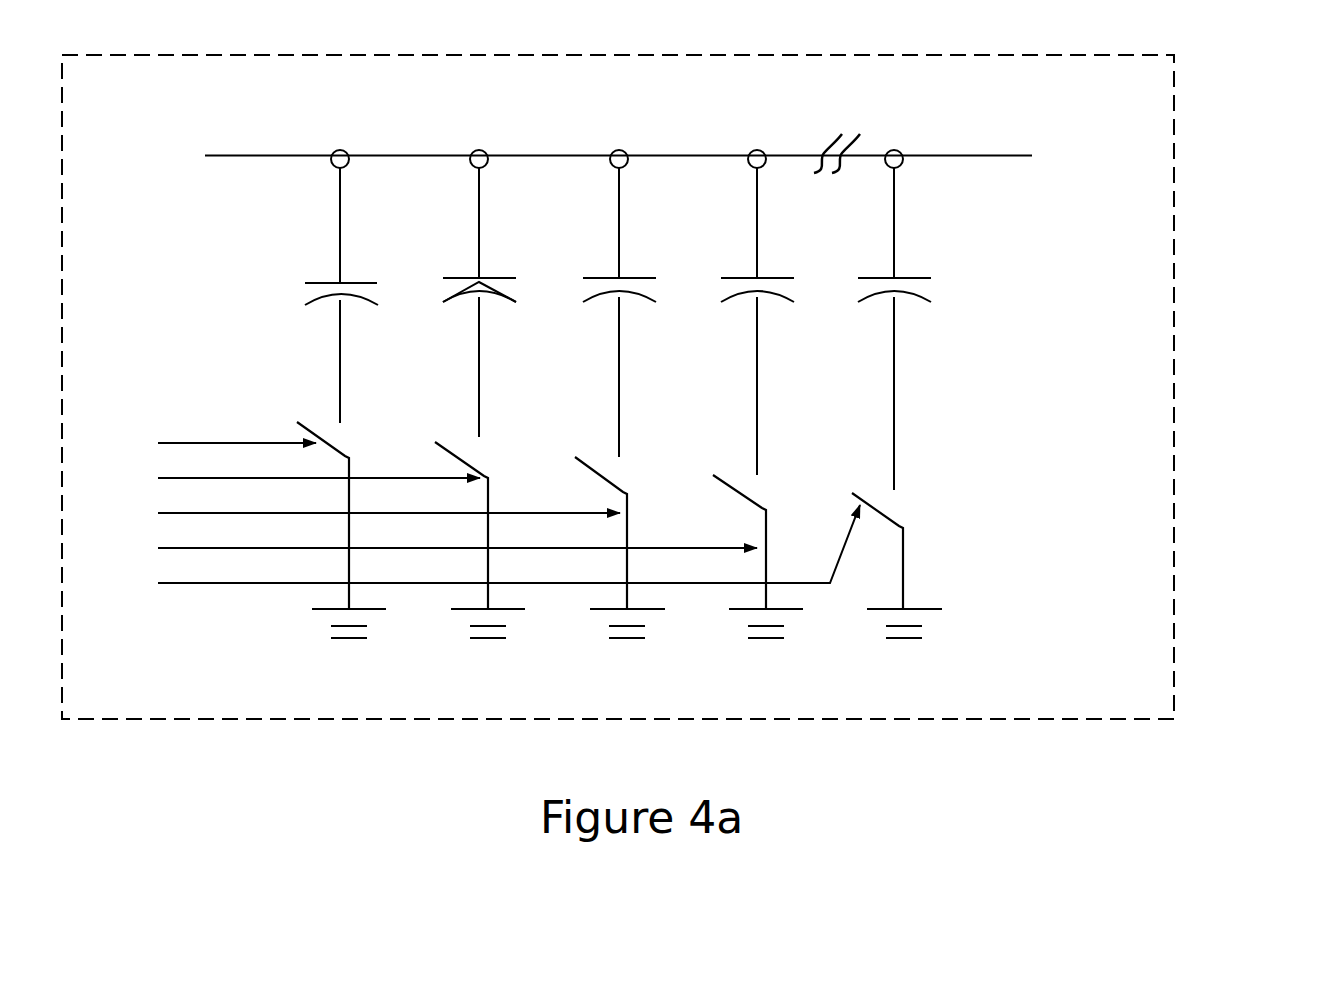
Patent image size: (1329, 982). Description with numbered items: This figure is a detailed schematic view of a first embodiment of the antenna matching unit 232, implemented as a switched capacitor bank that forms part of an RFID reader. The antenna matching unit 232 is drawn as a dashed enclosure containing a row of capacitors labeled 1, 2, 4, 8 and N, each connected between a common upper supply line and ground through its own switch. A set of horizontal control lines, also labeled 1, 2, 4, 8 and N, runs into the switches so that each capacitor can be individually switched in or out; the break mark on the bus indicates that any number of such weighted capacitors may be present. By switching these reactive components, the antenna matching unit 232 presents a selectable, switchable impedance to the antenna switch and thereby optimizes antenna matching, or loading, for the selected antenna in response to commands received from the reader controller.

The antenna matching unit 232 is at (1174, 390).
The capacitor branch with weight 1 and control line 1 is at (272, 394).
The capacitor branch with weight 2 and control line 2 is at (341, 394).
The capacitor branch with weight 4 and control line 4 is at (411, 394).
The capacitor branch with weight 8 and control line 8 is at (480, 394).
The capacitor branch with weight N and control line N is at (550, 394).